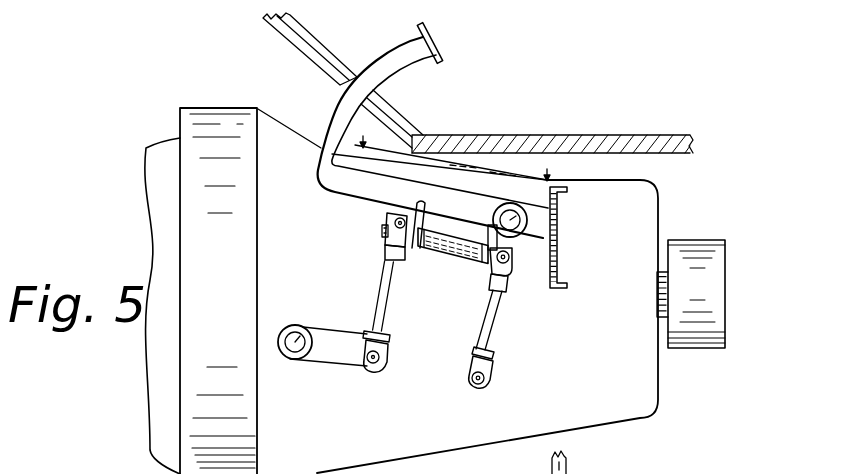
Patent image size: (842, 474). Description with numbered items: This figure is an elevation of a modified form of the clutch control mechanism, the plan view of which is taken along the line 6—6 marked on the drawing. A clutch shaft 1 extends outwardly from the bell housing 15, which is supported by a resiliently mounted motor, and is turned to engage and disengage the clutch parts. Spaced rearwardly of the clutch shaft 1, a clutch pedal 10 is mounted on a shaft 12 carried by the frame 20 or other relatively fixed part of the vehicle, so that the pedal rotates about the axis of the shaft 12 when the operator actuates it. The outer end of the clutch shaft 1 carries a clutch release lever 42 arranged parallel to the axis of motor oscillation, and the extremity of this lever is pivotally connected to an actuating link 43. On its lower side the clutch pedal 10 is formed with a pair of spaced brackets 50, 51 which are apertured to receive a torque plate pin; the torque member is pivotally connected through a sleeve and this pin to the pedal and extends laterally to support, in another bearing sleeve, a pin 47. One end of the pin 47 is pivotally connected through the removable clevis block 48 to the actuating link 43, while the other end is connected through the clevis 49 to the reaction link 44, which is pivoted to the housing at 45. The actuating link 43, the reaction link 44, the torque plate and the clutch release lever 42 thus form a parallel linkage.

The clutch shaft 1 is at (293, 345).
The section line 6— 6 is at (459, 151).
The clutch pedal 10 is at (340, 190).
The shaft 12 is at (523, 216).
The bell housing 15 is at (201, 291).
The frame 20 is at (558, 262).
The clutch release lever 42 is at (335, 352).
The actuating link 43 is at (378, 297).
The reaction link 44 is at (493, 327).
The pivot 45 is at (487, 380).
The pin 47 is at (445, 263).
The removable clevis block 48 is at (377, 260).
The clevis 49 is at (500, 273).
The bracket 50 is at (425, 213).
The bracket 51 is at (510, 247).